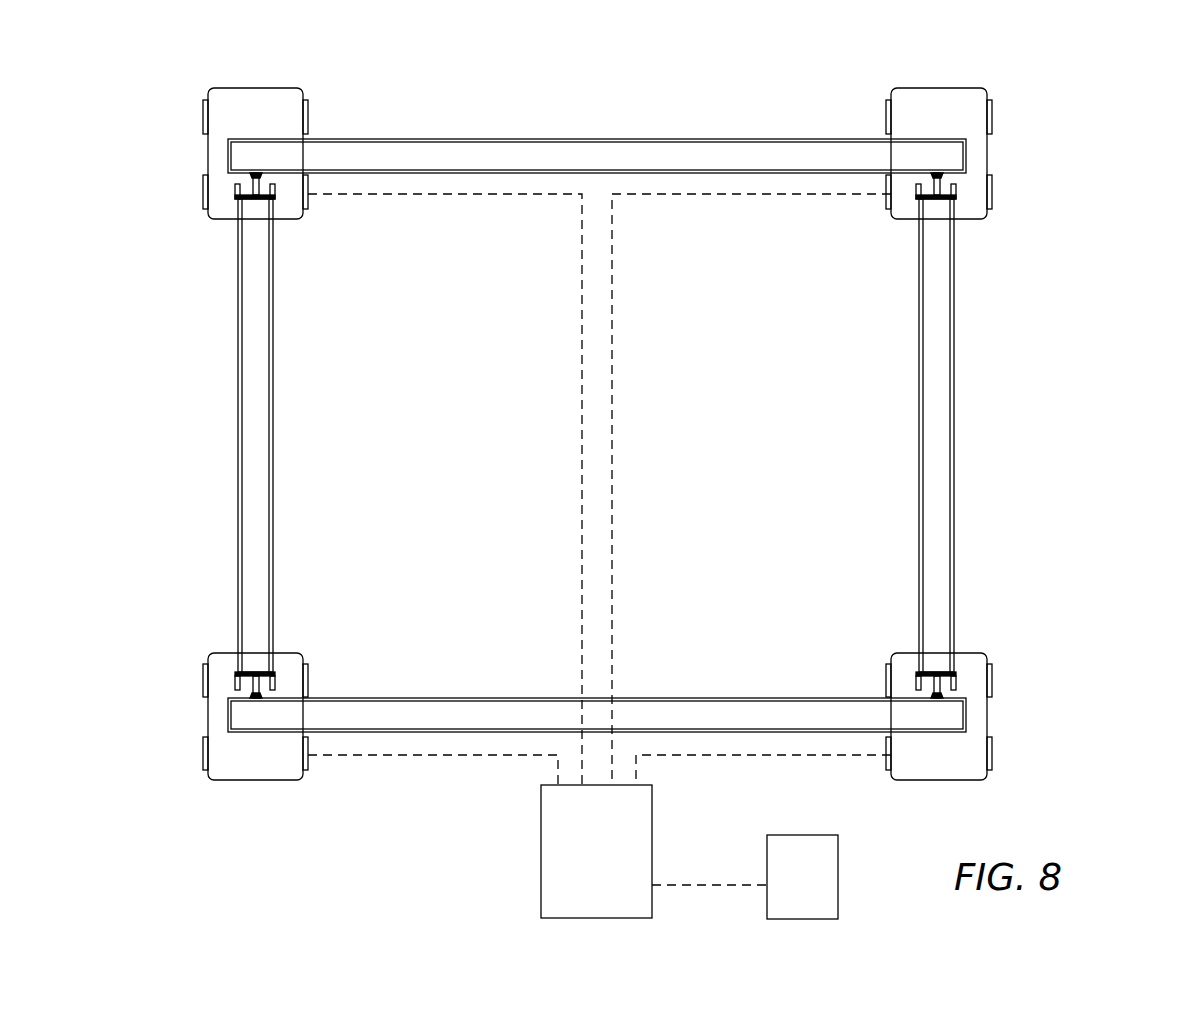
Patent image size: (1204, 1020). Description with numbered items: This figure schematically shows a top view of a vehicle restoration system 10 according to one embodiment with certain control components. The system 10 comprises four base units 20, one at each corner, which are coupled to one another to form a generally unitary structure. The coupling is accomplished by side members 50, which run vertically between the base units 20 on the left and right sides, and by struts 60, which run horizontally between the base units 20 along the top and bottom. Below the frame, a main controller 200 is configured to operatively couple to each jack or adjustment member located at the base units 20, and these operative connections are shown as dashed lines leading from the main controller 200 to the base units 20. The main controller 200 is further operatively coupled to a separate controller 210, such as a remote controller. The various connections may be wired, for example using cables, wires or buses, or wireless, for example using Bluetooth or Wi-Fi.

The system 10 is at (1104, 86).
The base unit 20 is at (188, 166).
The side member 50 is at (258, 362).
The strut 60 is at (575, 152).
The main controller 200 is at (541, 862).
The separate controller 210 is at (840, 856).